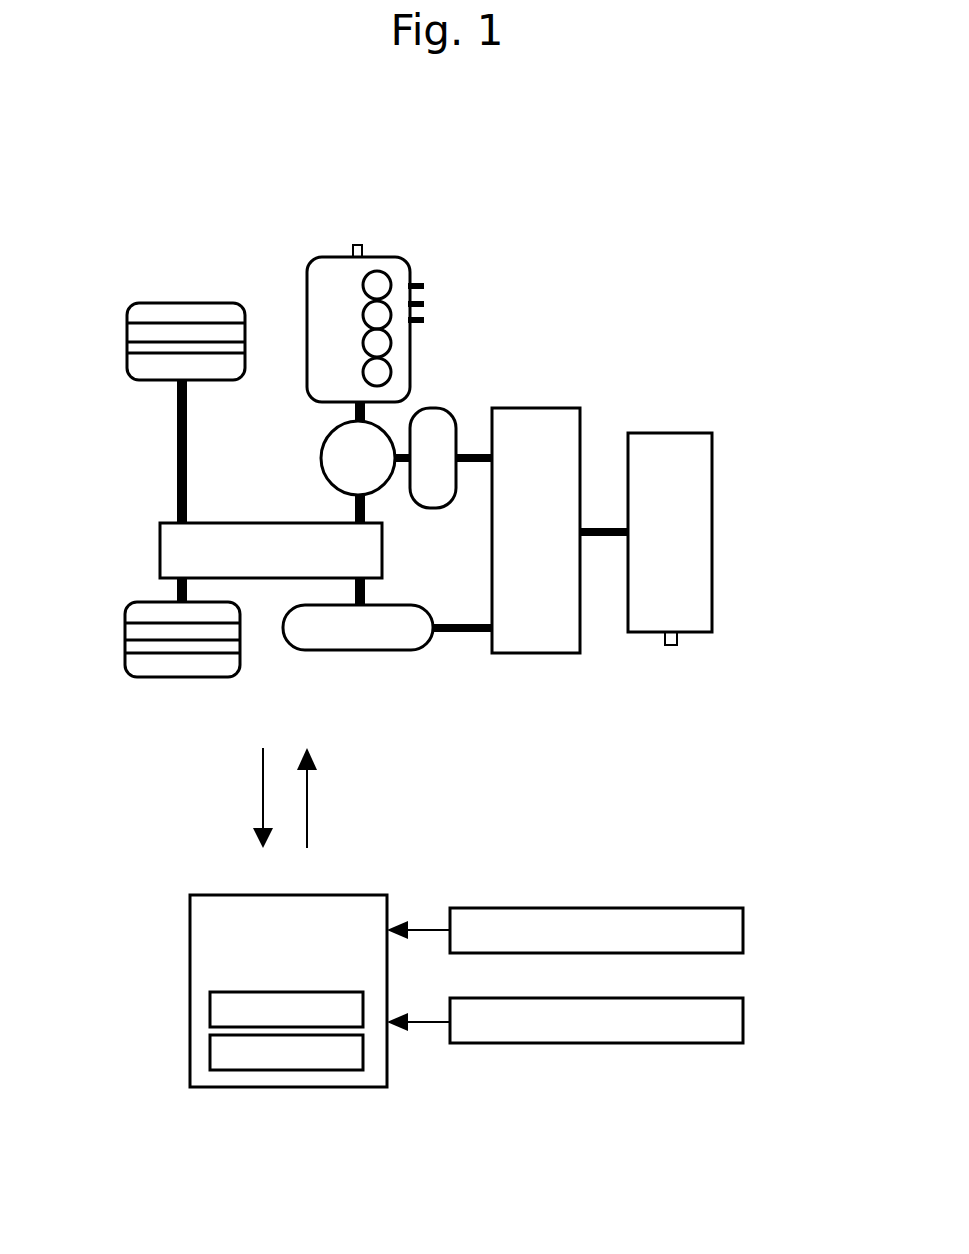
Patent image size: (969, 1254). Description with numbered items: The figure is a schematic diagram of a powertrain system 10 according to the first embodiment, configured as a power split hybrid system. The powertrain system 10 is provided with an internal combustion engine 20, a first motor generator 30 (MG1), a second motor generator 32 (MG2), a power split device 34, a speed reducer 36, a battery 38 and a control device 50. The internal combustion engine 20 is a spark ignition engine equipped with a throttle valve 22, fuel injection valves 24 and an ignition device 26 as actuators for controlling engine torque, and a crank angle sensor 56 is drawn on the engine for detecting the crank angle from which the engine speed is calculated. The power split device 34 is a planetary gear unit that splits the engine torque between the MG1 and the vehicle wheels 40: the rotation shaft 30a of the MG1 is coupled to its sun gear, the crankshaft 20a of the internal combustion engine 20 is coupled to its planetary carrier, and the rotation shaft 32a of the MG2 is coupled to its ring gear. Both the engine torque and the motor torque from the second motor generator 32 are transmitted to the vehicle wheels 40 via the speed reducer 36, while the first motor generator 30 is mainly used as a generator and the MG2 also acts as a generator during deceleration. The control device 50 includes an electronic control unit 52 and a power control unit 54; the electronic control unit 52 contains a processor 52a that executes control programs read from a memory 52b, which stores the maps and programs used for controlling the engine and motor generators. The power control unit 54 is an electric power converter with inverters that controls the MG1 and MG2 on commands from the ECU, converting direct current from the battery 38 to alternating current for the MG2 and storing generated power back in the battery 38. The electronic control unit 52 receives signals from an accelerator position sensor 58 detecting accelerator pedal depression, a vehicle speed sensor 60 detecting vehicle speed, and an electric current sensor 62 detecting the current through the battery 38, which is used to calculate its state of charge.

The powertrain system 10 is at (719, 205).
The internal combustion engine 20 is at (388, 248).
The crankshaft 20a is at (355, 412).
The throttle valve 22 is at (424, 286).
The fuel injection valves 24 is at (424, 303).
The ignition device 26 is at (424, 318).
The first motor generator 30 is at (432, 407).
The rotation shaft of the MG1 30a is at (405, 463).
The second motor generator 32 is at (358, 657).
The rotation shaft of the MG2 32a is at (363, 605).
The power split device 34 is at (323, 445).
The speed reducer 36 is at (232, 523).
The battery 38 is at (678, 433).
The vehicle wheels 40 is at (185, 303).
The control device 50 is at (445, 753).
The electronic control unit 52 is at (357, 873).
The processor 52a is at (210, 1008).
The memory 52b is at (210, 1052).
The power control unit 54 is at (518, 653).
The crank angle sensor 56 is at (353, 247).
The accelerator position sensor 58 is at (710, 908).
The vehicle speed sensor 60 is at (710, 998).
The electric current sensor 62 is at (676, 645).